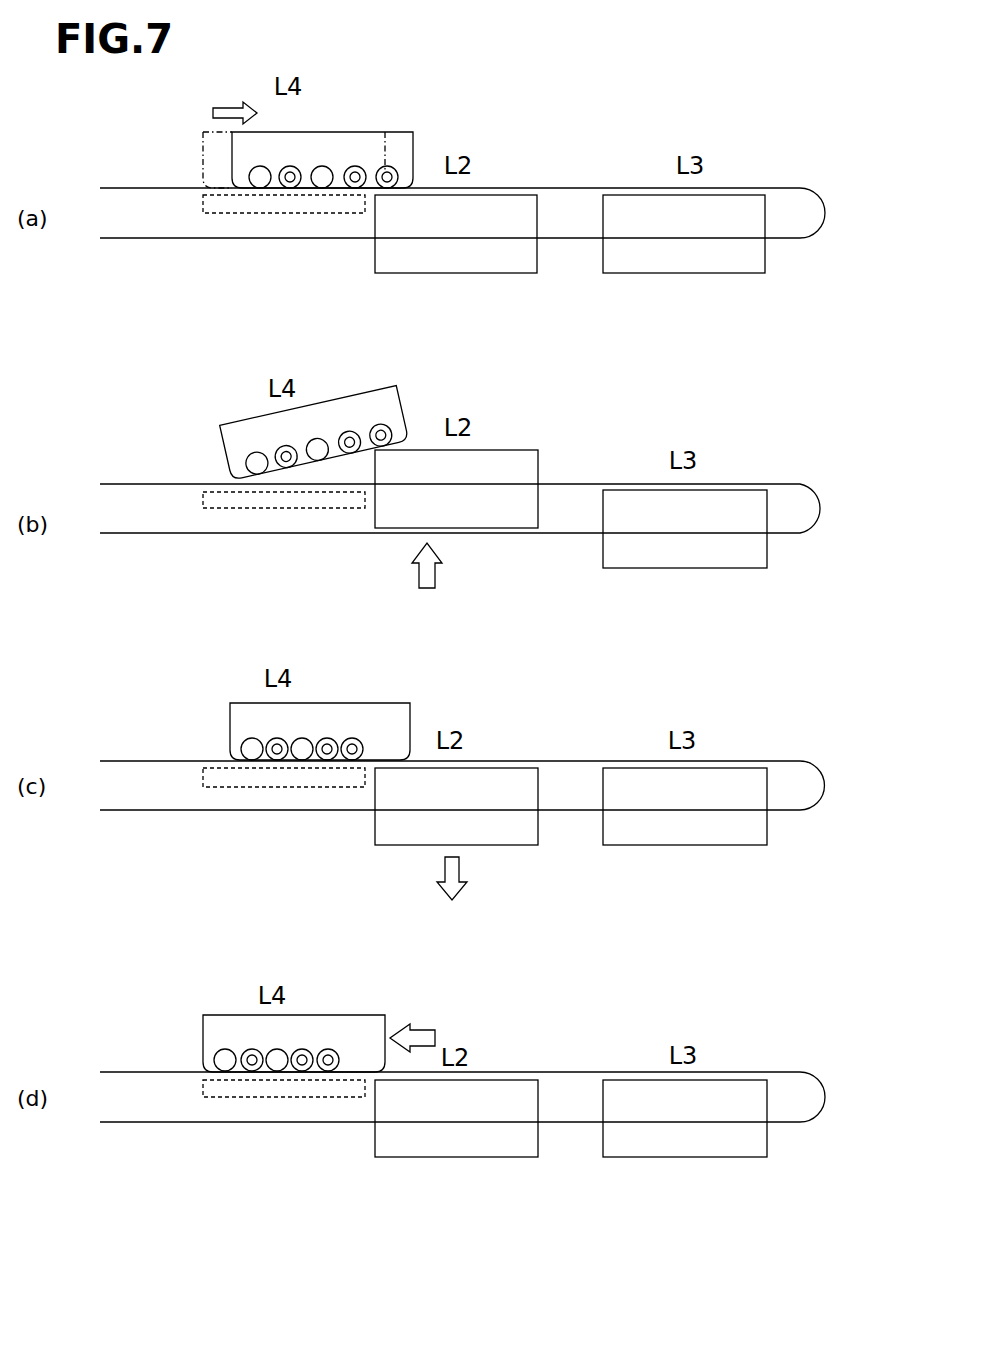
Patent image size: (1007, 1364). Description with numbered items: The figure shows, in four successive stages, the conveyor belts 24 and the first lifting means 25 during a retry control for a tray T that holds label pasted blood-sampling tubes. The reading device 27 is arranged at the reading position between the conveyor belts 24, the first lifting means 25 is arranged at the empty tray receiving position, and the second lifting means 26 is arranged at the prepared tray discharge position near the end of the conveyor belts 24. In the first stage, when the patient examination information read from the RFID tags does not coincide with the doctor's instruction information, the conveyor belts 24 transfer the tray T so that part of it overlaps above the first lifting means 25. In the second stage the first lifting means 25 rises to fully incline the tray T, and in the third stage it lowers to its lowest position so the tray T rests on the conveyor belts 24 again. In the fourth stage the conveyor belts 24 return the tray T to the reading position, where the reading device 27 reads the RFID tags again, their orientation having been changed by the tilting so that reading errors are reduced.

The conveyor belt 24 is at (800, 198).
The first lifting means 25 is at (488, 267).
The second lifting means 26 is at (738, 263).
The reading device 27 is at (273, 203).
The tray T is at (405, 148).